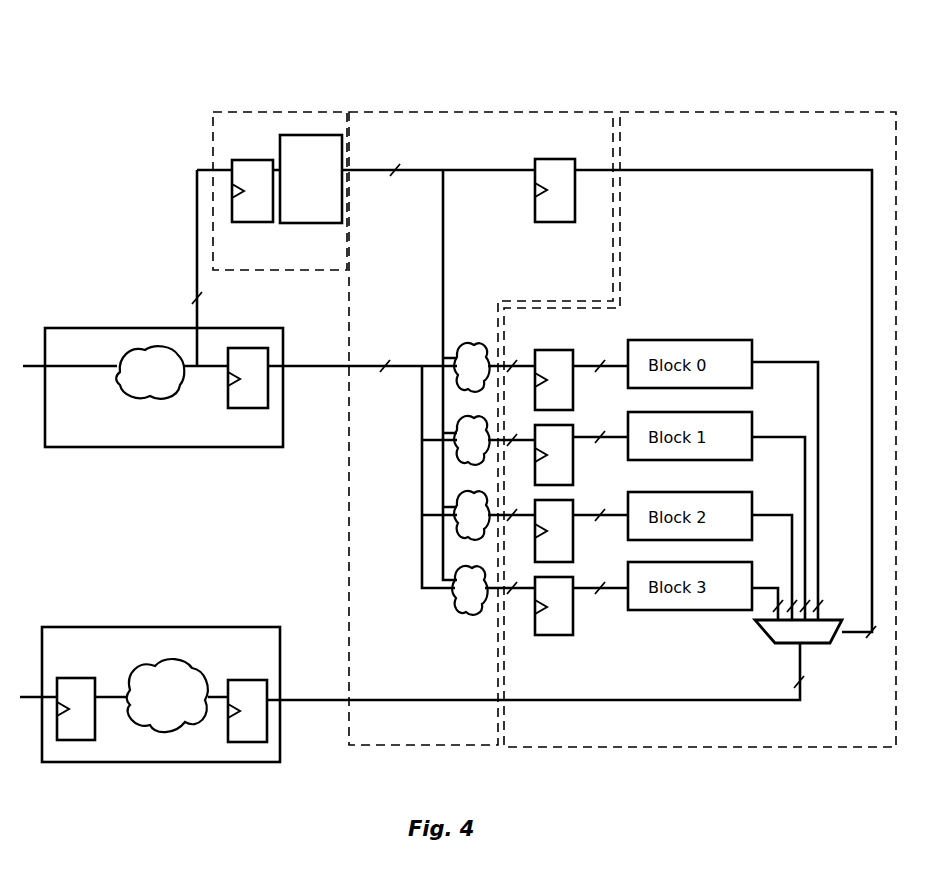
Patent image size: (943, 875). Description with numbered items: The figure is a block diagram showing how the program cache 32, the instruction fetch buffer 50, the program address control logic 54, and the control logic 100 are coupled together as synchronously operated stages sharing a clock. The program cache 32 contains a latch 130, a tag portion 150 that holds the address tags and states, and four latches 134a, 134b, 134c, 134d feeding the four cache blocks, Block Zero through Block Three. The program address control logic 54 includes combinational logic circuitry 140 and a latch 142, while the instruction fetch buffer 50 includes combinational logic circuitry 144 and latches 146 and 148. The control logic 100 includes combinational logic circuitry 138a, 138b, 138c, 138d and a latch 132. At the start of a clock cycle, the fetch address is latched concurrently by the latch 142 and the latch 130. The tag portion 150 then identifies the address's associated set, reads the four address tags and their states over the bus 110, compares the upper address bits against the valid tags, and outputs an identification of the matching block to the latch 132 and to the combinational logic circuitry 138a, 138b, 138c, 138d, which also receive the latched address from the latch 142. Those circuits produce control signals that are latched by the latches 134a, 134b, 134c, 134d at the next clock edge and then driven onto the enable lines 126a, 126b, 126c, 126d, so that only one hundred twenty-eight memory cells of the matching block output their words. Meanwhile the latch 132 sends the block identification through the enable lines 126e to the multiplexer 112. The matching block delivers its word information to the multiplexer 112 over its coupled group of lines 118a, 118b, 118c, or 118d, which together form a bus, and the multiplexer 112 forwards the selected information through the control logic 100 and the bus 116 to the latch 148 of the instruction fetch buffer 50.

The program cache 32 is at (287, 112).
The control logic 100 is at (478, 112).
The tag portion 150 is at (293, 135).
The latch 130 is at (247, 222).
The bus 110 is at (417, 170).
The latch 132 is at (550, 222).
The enable lines 126e is at (680, 170).
The program address control logic 54 is at (162, 447).
The combinational logic circuitry 140 is at (140, 400).
The latch 142 is at (228, 378).
The combinational logic circuitry 138a is at (460, 345).
The combinational logic circuitry 138b is at (460, 432).
The combinational logic circuitry 138c is at (460, 505).
The combinational logic circuitry 138d is at (458, 600).
The enable lines 126a is at (535, 360).
The enable lines 126b is at (535, 430).
The enable lines 126c is at (535, 505).
The enable lines 126d is at (535, 582).
The latch 134a is at (573, 375).
The latch 134b is at (573, 450).
The latch 134c is at (573, 525).
The latch 134d is at (573, 610).
The group of lines 118a is at (768, 362).
The group of lines 118b is at (760, 437).
The group of lines 118c is at (760, 515).
The group of lines 118d is at (760, 588).
The multiplexer 112 is at (812, 645).
The bus 116 is at (700, 700).
The instruction fetch buffer 50 is at (157, 627).
The latch 146 is at (72, 678).
The combinational logic circuitry 144 is at (160, 662).
The latch 148 is at (245, 680).